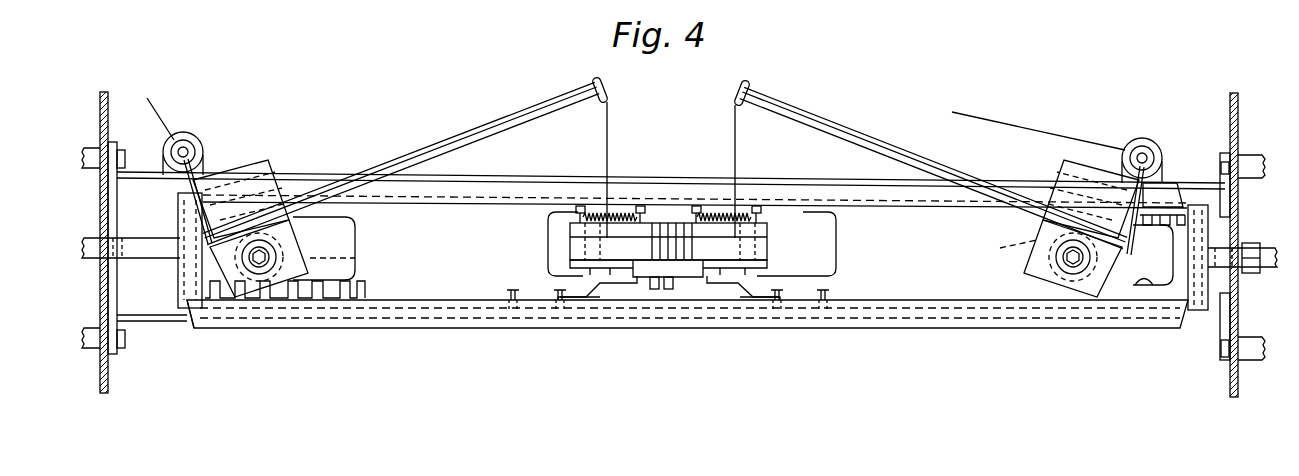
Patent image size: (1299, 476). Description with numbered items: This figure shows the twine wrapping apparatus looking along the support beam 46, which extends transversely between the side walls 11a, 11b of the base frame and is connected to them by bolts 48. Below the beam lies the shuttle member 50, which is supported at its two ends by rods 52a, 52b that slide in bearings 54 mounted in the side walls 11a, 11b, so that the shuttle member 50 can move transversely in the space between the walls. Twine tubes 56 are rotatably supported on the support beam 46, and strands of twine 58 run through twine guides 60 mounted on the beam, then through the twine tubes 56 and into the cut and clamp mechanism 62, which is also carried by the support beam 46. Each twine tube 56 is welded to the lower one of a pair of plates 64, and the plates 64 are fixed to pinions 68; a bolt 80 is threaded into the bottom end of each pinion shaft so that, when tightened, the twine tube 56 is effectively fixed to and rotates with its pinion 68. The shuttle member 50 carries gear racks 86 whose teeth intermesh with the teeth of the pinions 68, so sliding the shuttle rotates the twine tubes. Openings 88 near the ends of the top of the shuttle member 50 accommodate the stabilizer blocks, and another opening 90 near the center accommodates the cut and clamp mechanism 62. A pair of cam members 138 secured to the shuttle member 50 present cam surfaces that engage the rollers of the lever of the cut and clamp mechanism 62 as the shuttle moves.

The side wall 11a is at (100, 104).
The side wall 11b is at (1240, 113).
The bolts 48 is at (122, 148).
The rod 52a is at (100, 240).
The rod 52b is at (1278, 256).
The bearings 54 is at (1251, 263).
The shuttle member 50 is at (478, 314).
The cut and clamp mechanism 62 is at (665, 196).
The support beam 46 is at (182, 323).
The twine guides 60 is at (196, 136).
The strands of twine 58 is at (731, 109).
The twine tubes 56 is at (504, 118).
The plates 64 is at (262, 158).
The bolt 80 is at (266, 264).
The openings 88 is at (355, 228).
The pinions 68 is at (310, 258).
The gear racks 86 is at (333, 288).
The opening 90 is at (836, 240).
The cam members 138 is at (718, 284).